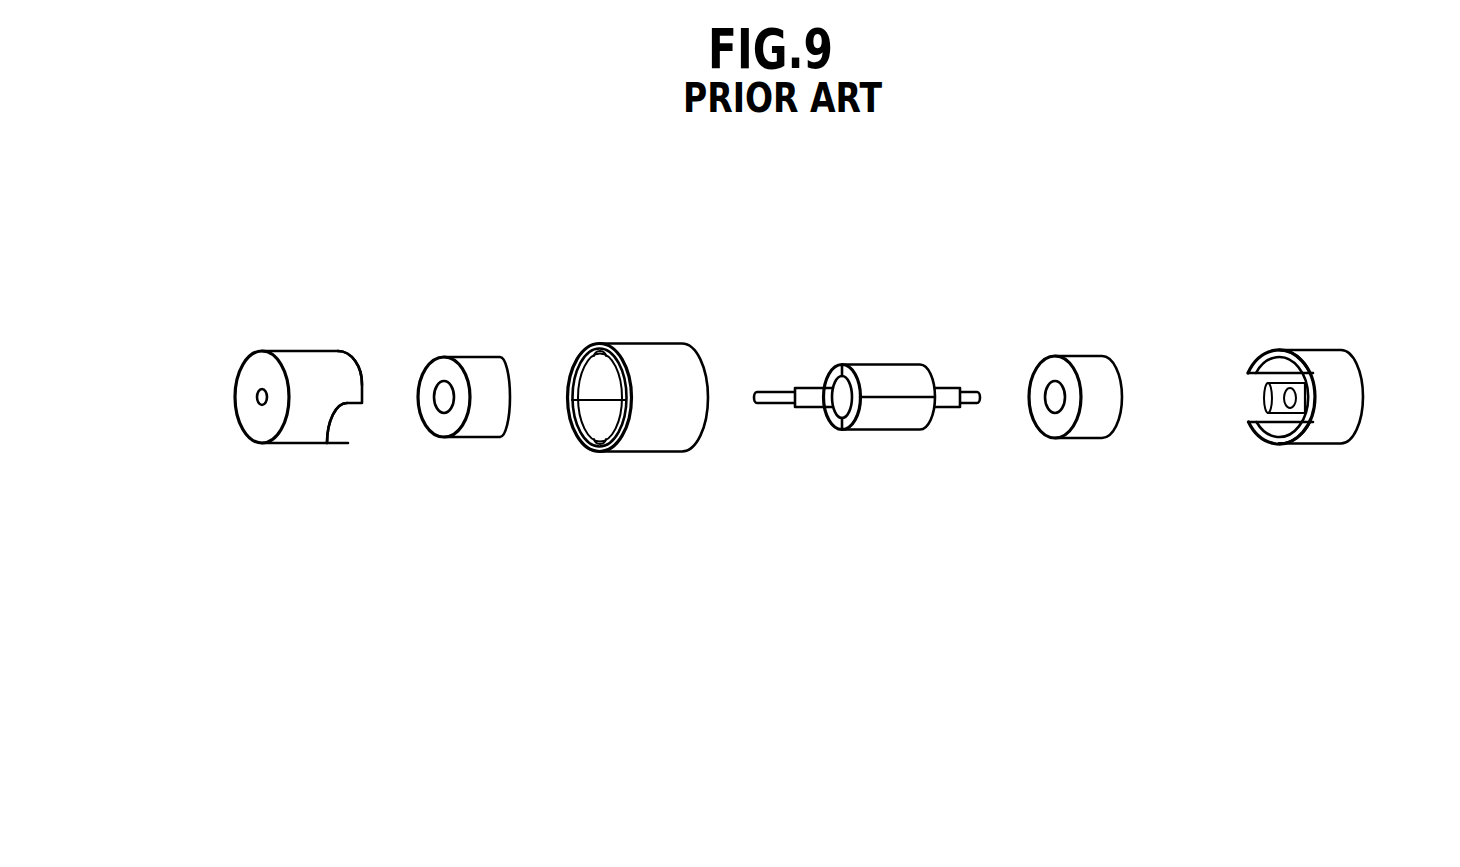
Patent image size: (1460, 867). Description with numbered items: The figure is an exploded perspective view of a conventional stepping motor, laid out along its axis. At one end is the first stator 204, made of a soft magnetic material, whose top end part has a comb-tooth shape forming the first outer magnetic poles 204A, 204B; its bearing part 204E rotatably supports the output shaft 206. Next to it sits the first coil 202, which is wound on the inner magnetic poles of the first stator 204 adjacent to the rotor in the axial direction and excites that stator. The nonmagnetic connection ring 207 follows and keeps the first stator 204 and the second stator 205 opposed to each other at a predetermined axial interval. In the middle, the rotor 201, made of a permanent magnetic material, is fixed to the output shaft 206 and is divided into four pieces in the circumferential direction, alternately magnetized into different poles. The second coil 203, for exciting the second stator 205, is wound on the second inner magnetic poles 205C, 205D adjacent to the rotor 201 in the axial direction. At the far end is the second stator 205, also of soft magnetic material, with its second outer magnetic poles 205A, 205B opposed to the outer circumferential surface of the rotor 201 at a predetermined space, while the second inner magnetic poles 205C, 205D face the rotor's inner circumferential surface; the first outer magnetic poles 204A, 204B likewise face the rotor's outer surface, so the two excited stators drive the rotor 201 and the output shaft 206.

The rotor 201 is at (888, 372).
The first coil 202 is at (473, 365).
The second coil 203 is at (1083, 360).
The first stator 204 is at (292, 350).
The first outer magnetic pole 204A is at (343, 367).
The first outer magnetic pole 204B is at (328, 422).
The bearing part 204E is at (258, 395).
The second stator 205 is at (1281, 394).
The second outer magnetic pole 205A is at (1312, 358).
The second outer magnetic pole 205B is at (1297, 438).
The second inner magnetic pole 205C is at (1265, 383).
The second inner magnetic pole 205D is at (1265, 413).
The output shaft 206 is at (812, 400).
The connection ring 207 is at (650, 357).